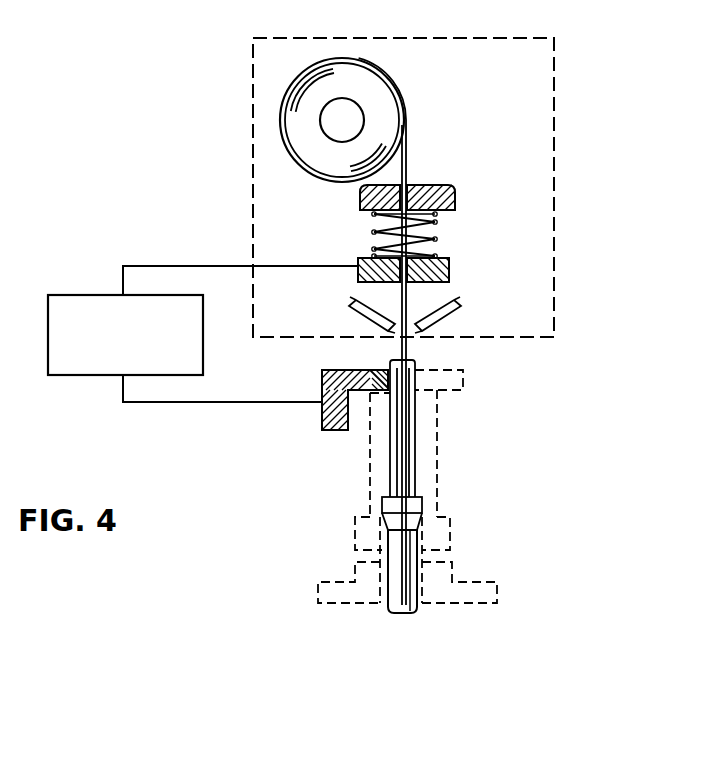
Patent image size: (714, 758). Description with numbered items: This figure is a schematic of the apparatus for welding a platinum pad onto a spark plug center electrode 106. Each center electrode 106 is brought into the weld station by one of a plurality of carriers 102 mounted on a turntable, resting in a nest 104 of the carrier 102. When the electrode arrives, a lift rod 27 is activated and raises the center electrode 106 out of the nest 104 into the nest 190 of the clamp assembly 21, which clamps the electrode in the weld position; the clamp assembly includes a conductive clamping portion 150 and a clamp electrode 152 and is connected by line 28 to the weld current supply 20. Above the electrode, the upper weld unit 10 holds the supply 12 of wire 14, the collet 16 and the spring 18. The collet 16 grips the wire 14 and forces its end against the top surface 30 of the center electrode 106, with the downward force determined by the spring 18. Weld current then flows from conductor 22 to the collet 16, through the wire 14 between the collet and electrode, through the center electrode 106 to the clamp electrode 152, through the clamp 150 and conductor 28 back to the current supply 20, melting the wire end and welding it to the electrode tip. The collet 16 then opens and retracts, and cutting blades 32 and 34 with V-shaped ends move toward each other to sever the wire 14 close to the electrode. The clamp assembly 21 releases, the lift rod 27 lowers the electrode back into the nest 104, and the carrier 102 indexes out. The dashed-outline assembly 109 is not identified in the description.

The upper weld unit 10 is at (548, 158).
The supply 12 is at (387, 103).
The wire 14 is at (407, 170).
The collet 16 is at (445, 275).
The spring 18 is at (437, 235).
The weld current supply 20 is at (73, 377).
The clamp assembly 21 is at (338, 435).
The conductor 22 is at (197, 263).
The lift rod 27 is at (397, 593).
The line 28 is at (210, 405).
The top surface 30 is at (413, 365).
The cutting blade 32 is at (365, 318).
The cutting blade 34 is at (458, 318).
The carrier 102 is at (485, 592).
The nest 104 is at (443, 568).
The spark plug center electrode 106 is at (410, 435).
The nozzle assembly 109 is at (540, 357).
The conductive clamping portion 150 is at (320, 385).
The clamp electrode 152 is at (373, 368).
The nest 190 is at (428, 477).